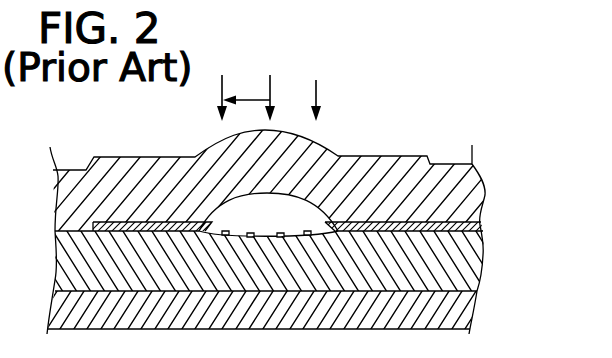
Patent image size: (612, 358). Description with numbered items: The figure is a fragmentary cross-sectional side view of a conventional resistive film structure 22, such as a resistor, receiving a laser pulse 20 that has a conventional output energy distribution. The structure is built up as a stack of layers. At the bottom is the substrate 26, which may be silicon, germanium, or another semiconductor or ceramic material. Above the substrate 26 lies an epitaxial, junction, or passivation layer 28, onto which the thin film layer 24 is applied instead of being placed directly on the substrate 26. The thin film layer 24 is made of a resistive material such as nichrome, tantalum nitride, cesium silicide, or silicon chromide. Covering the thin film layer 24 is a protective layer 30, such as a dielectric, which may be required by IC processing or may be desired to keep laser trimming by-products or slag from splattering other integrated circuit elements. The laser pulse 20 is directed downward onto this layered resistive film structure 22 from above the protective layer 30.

The laser pulse 20 is at (318, 91).
The resistive film structure 22 is at (473, 140).
The protective layer 30 is at (482, 179).
The thin film layer 24 is at (479, 215).
The passivation layer 28 is at (484, 256).
The substrate 26 is at (469, 306).